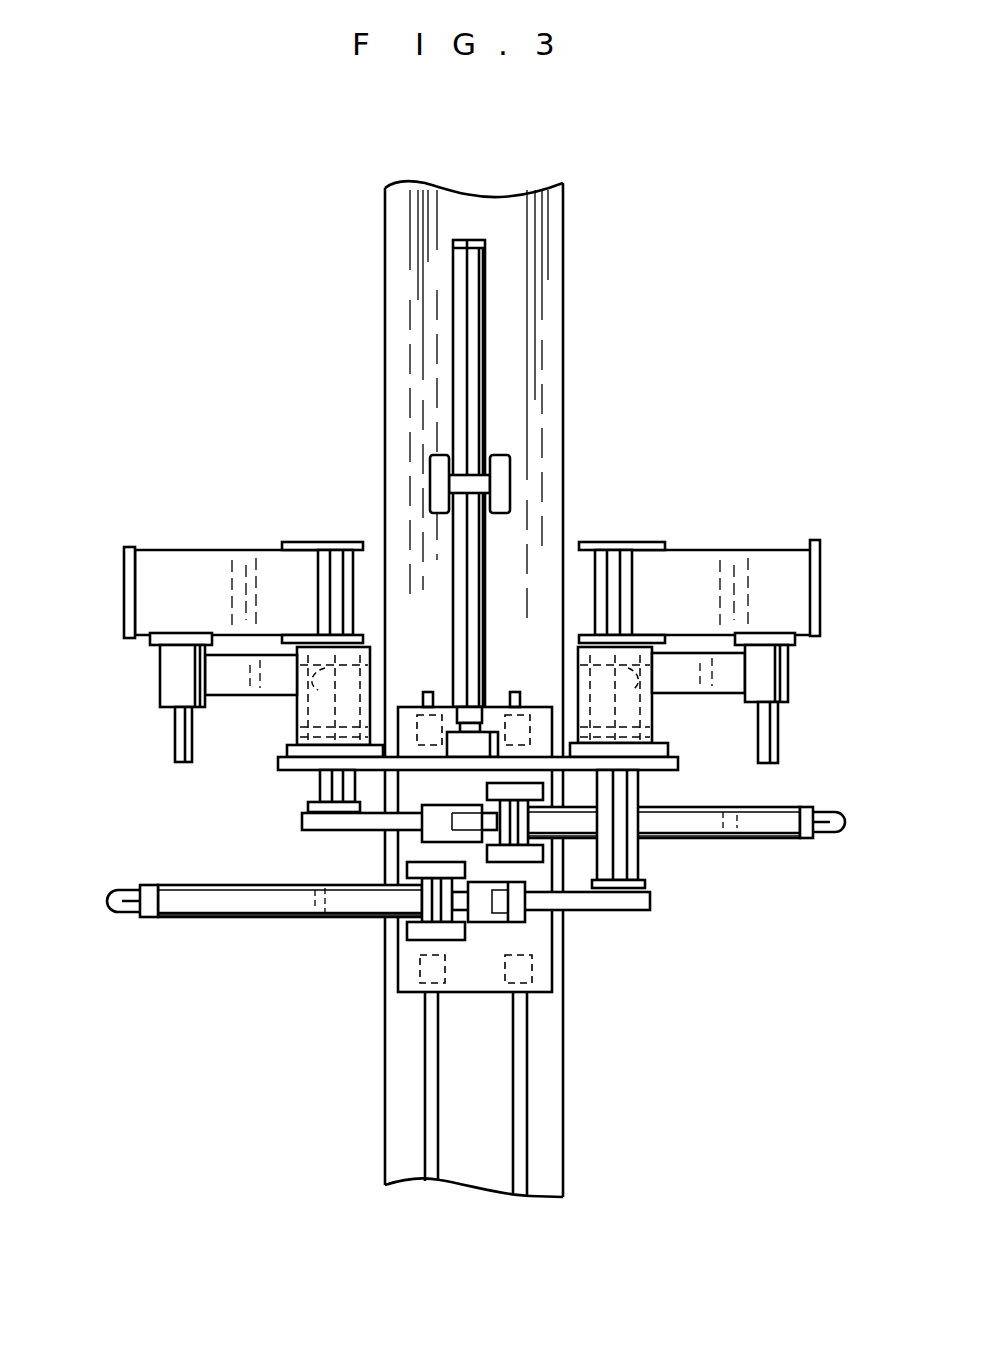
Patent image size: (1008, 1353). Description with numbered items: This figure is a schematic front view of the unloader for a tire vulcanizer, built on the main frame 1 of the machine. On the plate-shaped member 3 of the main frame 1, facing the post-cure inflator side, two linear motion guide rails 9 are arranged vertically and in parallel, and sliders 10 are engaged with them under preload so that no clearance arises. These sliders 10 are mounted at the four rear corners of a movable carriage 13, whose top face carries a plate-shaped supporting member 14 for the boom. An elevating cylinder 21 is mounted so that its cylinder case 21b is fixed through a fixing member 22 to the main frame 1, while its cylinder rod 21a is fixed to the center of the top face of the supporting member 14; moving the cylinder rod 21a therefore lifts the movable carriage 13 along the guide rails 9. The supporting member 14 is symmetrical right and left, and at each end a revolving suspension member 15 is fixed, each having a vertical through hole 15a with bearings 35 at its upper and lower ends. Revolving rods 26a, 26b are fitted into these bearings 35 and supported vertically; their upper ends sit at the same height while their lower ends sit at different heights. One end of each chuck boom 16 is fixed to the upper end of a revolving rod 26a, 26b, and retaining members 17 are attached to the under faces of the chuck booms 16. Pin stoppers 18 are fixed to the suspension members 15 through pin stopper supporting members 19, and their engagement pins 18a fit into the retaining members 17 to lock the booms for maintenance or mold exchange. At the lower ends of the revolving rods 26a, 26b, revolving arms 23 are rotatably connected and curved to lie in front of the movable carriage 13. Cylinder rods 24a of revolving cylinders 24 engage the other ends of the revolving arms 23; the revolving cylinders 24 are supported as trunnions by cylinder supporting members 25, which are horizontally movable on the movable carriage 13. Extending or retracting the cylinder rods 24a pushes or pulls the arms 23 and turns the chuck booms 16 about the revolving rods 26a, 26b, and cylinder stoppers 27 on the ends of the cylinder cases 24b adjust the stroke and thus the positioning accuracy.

The main frame 1 is at (568, 220).
The plate-shaped member 3 is at (535, 290).
The linear motion guide rails 9 is at (528, 1132).
The sliders 10 is at (420, 712).
The movable carriage 13 is at (405, 968).
The supporting member for a boom 14 is at (676, 768).
The revolving suspension members 15 is at (297, 745).
The through hole 15a is at (316, 680).
The chuck booms 16 is at (208, 562).
The retaining members 17 is at (160, 632).
The pin stoppers 18 is at (150, 702).
The engagement pins 18a is at (178, 745).
The pin stopper supporting members 19 is at (212, 672).
The elevating cylinder 21 is at (500, 380).
The cylinder rod 21a is at (470, 718).
The cylinder case 21b is at (483, 538).
The fixing member 22 is at (440, 470).
The revolving arms 23 is at (302, 822).
The revolving cylinders 24 is at (780, 845).
The cylinder rods 24a is at (482, 825).
The cylinder cases 24b is at (750, 808).
The cylinder supporting members 25 is at (420, 936).
The revolving rod 26a is at (630, 855).
The revolving rod 26b is at (322, 790).
The cylinder stoppers 27 is at (830, 832).
The bearings 35 is at (340, 735).